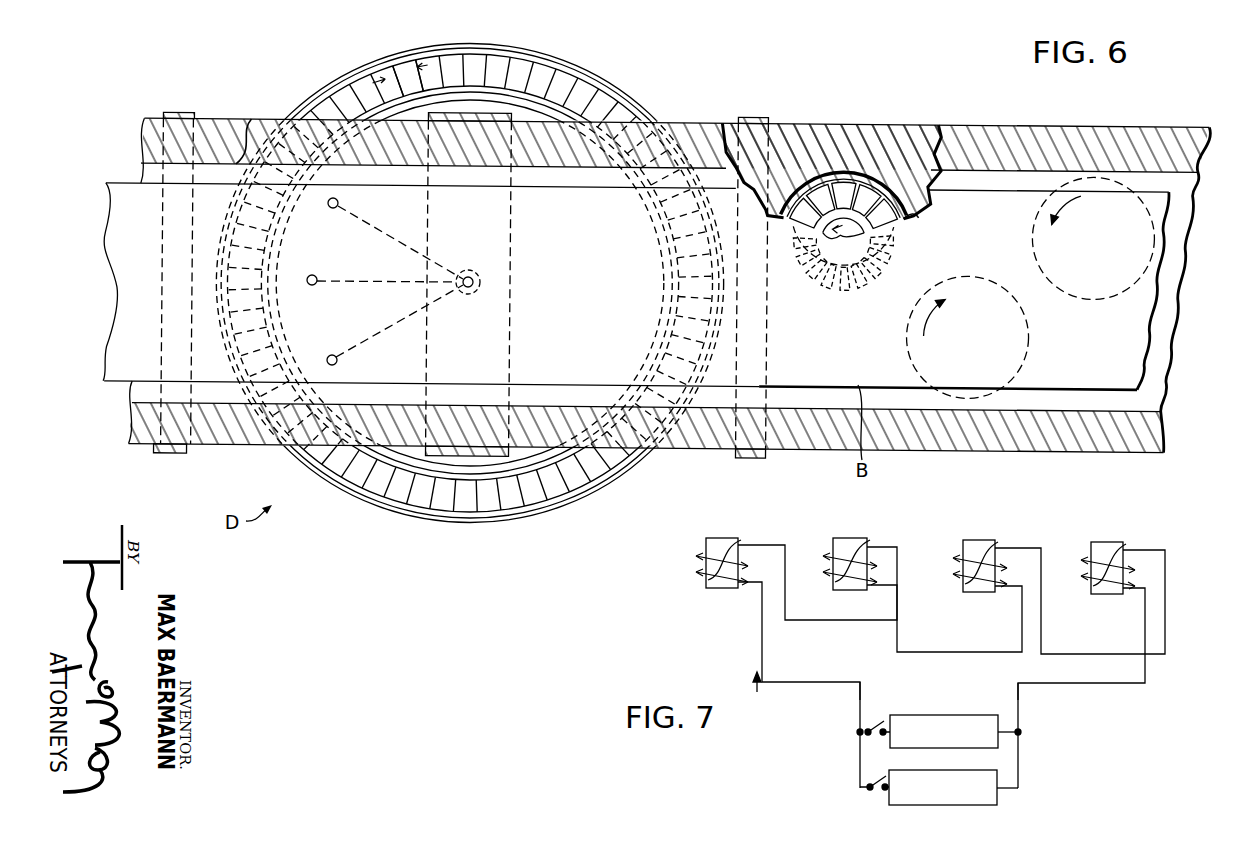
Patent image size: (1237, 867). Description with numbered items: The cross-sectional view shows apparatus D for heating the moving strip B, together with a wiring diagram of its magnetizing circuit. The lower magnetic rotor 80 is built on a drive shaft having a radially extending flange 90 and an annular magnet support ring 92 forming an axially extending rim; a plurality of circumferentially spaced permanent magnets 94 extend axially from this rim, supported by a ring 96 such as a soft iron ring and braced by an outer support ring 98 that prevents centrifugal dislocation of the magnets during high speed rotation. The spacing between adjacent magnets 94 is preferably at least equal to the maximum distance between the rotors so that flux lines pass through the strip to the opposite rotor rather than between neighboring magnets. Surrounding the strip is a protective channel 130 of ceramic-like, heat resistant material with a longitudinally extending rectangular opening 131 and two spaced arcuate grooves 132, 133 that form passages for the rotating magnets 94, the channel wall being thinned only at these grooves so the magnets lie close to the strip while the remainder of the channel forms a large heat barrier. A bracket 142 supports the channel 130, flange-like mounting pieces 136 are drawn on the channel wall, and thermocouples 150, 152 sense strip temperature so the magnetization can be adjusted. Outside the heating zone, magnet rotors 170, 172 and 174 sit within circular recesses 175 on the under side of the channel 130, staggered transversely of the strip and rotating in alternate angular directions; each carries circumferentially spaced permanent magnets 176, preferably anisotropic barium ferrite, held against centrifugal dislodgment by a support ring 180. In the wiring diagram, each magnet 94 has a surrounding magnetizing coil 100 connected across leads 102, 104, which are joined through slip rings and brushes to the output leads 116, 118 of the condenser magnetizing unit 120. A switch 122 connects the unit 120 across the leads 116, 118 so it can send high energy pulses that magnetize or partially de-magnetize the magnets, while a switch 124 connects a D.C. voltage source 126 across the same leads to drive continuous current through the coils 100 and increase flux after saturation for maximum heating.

In FIG. 6, the lower magnetic rotor 80 is at (565, 62).
In FIG. 6, the radially extending flange 90 is at (455, 465).
In FIG. 6, the annular magnet support ring 92 is at (437, 97).
In FIG. 6, the permanent magnets 94 is at (478, 57).
In FIG. 7, the permanent magnets 94 is at (716, 537).
In FIG. 6, the ring 96 is at (597, 97).
In FIG. 6, the outer support ring 98 is at (422, 53).
In FIG. 6, the protective channel 130 is at (236, 122).
In FIG. 6, the longitudinally extending rectangular opening 131 is at (250, 121).
In FIG. 6, the arcuate groove 132 is at (252, 445).
In FIG. 6, the arcuate groove 133 is at (636, 455).
In FIG. 6, the mounting flanges 136 is at (178, 113).
In FIG. 6, the bracket 142 is at (514, 120).
In FIG. 6, the thermocouple 150 is at (472, 271).
In FIG. 6, the thermocouple 152 is at (345, 202).
In FIG. 6, the magnet rotor 170 is at (831, 172).
In FIG. 6, the magnet rotor 172 is at (966, 283).
In FIG. 6, the magnet rotor 174 is at (1084, 296).
In FIG. 6, the circular recesses 175 is at (862, 176).
In FIG. 6, the permanent magnets 176 is at (887, 192).
In FIG. 6, the support ring 180 is at (916, 217).
In FIG. 7, the magnetizing coil 100 is at (724, 556).
In FIG. 7, the lead 102 is at (750, 583).
In FIG. 7, the lead 104 is at (779, 545).
In FIG. 7, the output lead 116 is at (862, 695).
In FIG. 7, the output lead 118 is at (1016, 692).
In FIG. 7, the condenser magnetizing unit 120 is at (930, 715).
In FIG. 7, the switch 122 is at (869, 725).
In FIG. 7, the switch 124 is at (871, 785).
In FIG. 7, the D.C. voltage source 126 is at (998, 796).